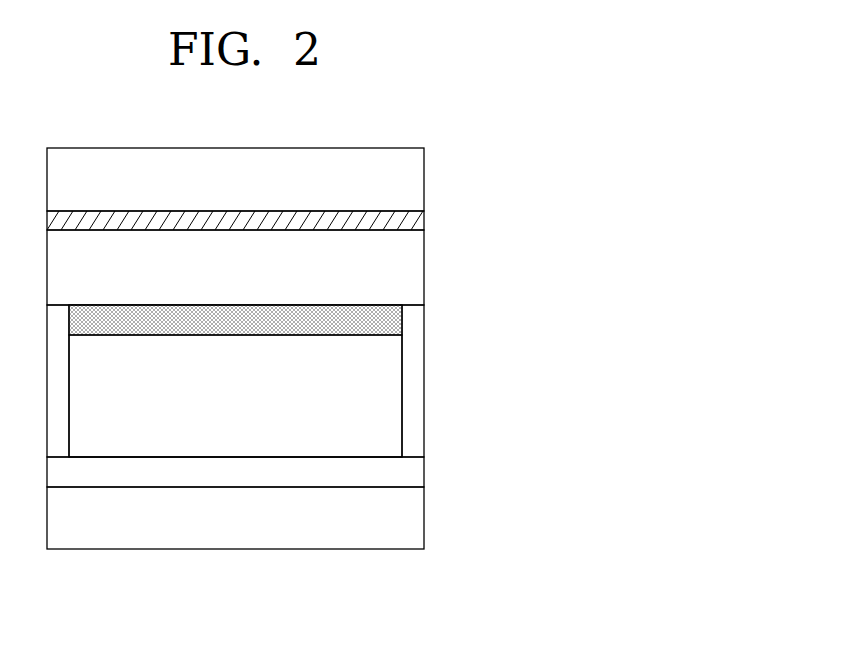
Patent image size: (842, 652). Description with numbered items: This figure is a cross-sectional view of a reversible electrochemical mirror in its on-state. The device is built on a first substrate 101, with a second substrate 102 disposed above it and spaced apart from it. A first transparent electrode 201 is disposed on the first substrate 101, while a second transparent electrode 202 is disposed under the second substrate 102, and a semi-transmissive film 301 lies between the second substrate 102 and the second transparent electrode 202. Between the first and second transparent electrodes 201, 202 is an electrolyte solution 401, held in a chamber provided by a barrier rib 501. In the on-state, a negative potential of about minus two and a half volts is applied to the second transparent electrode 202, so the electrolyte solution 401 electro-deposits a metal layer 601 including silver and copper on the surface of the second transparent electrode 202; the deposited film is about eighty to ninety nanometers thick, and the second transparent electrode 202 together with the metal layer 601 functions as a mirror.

The first substrate 101 is at (418, 516).
The second substrate 102 is at (418, 178).
The first transparent electrode 201 is at (418, 472).
The second transparent electrode 202 is at (418, 264).
The semi-transmissive film 301 is at (418, 220).
The electrolyte solution 401 is at (384, 372).
The barrier rib 501 is at (416, 416).
The metal layer 601 is at (385, 318).